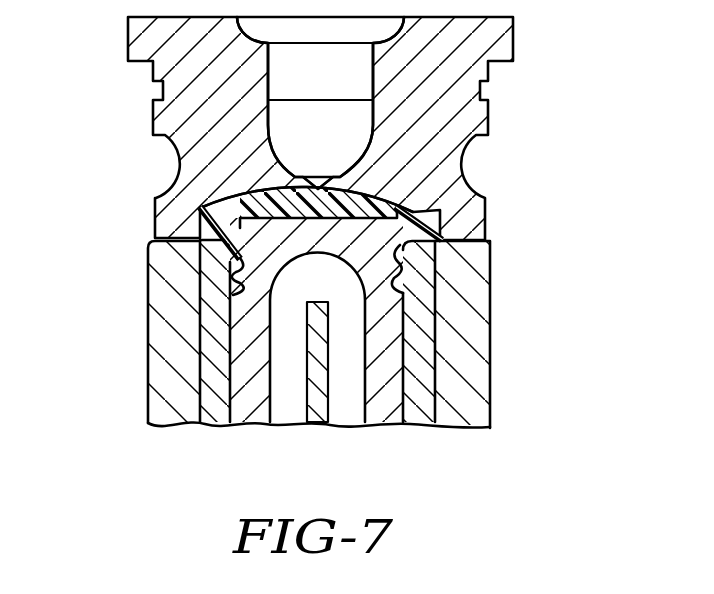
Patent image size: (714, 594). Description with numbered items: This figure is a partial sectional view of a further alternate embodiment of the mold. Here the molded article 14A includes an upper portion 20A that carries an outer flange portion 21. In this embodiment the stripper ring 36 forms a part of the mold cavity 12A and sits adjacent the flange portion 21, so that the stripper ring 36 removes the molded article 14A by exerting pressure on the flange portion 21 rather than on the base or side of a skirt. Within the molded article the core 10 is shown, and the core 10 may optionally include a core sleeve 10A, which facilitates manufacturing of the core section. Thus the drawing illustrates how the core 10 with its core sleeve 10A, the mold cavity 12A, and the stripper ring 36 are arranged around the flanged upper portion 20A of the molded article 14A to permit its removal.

The core 10 is at (397, 328).
The core sleeve 10A is at (393, 367).
The mold cavity 12A is at (450, 244).
The molded article 14A is at (483, 200).
The upper portion 20A is at (266, 195).
The outer flange portion 21 is at (210, 217).
The stripper ring 36 is at (175, 317).